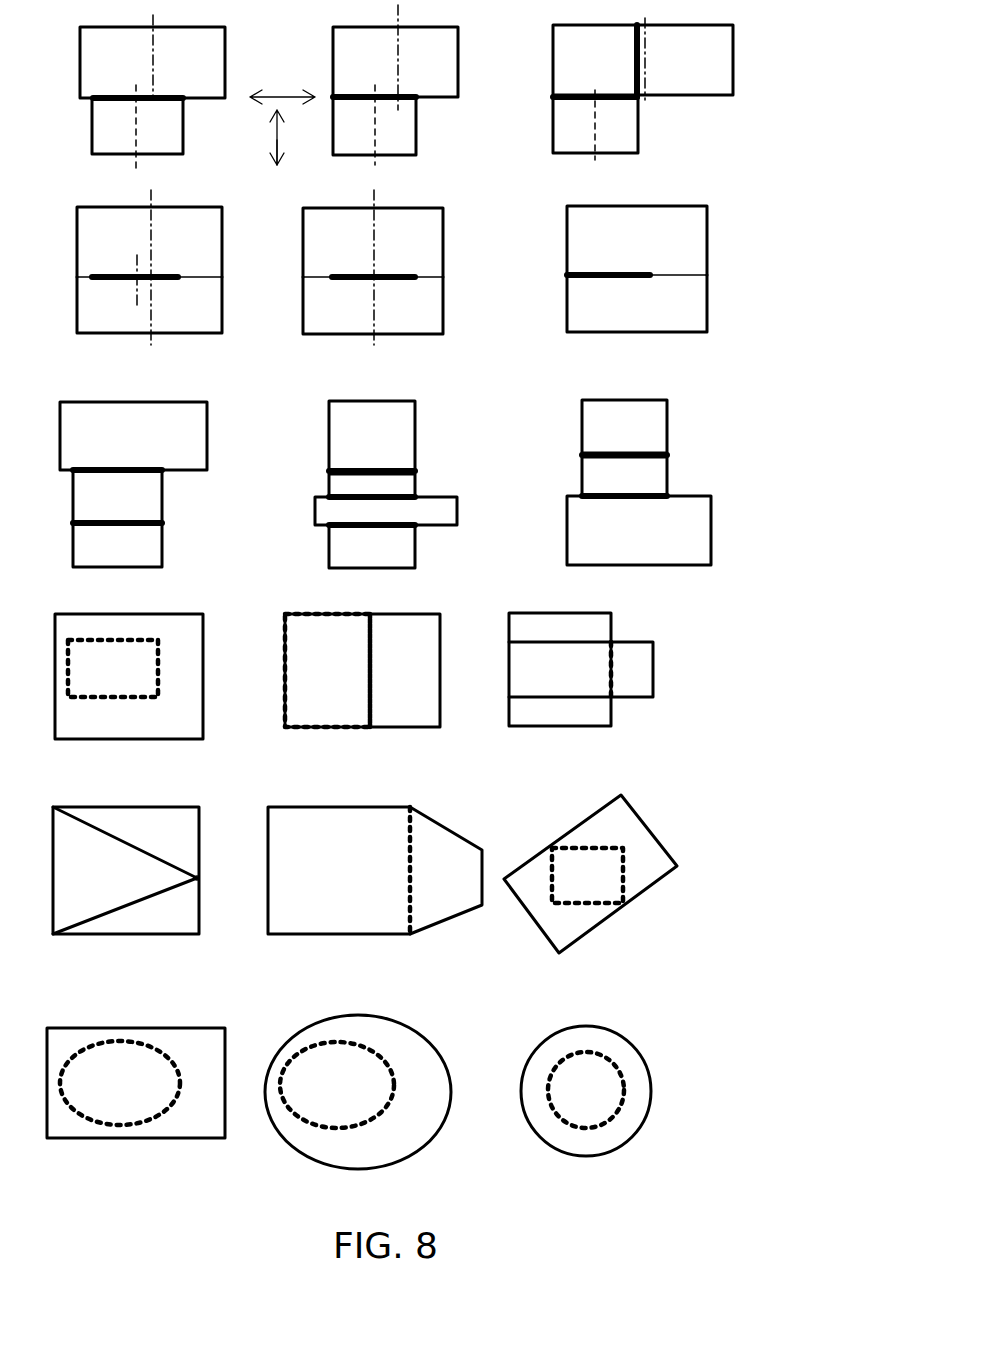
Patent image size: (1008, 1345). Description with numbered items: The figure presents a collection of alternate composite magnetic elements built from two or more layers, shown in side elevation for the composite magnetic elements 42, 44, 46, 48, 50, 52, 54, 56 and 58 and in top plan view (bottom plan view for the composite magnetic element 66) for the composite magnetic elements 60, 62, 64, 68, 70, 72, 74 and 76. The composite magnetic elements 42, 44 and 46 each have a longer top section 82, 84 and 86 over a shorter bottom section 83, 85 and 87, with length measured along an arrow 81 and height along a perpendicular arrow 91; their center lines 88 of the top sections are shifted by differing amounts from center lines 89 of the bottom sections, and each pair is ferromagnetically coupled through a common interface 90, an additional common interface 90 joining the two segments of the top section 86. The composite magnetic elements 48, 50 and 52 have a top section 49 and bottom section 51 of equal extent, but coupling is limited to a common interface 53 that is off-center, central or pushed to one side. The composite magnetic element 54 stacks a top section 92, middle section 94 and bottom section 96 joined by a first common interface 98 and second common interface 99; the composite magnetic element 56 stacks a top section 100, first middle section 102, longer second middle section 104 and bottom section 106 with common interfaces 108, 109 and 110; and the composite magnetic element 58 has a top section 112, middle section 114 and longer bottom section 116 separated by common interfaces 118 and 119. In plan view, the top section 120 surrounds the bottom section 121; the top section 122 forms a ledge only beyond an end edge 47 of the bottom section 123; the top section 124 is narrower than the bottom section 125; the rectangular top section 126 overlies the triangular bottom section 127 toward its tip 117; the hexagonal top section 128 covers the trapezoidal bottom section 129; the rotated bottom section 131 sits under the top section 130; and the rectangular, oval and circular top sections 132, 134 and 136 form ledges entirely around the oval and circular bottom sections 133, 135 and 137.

The composite magnetic element 42 is at (181, 101).
The composite magnetic element 44 is at (423, 100).
The composite magnetic element 46 is at (657, 101).
The end edge 47 is at (432, 705).
The composite magnetic element 48 is at (216, 363).
The top section 49 is at (205, 250).
The composite magnetic element 50 is at (431, 368).
The bottom section 51 is at (208, 305).
The composite magnetic element 52 is at (680, 356).
The common interface 53 is at (106, 272).
The composite magnetic element 54 is at (127, 485).
The composite magnetic element 56 is at (391, 492).
The composite magnetic element 58 is at (669, 482).
The composite magnetic element 60 is at (161, 701).
The composite magnetic element 62 is at (363, 698).
The composite magnetic element 64 is at (626, 698).
The composite magnetic element 66 is at (155, 907).
The composite magnetic element 68 is at (379, 895).
The composite magnetic element 70 is at (629, 886).
The composite magnetic element 72 is at (136, 1118).
The composite magnetic element 74 is at (393, 1100).
The composite magnetic element 76 is at (623, 1105).
The arrow 81 is at (280, 97).
The top section 82 is at (225, 60).
The bottom section 83 is at (92, 125).
The top section 84 is at (458, 48).
The bottom section 85 is at (297, 151).
The top section 86 is at (733, 60).
The bottom section 87 is at (553, 118).
The center line 88 is at (160, 66).
The center line 89 is at (138, 113).
The common interface 90 is at (108, 92).
The arrow 91 is at (275, 132).
The top section 92 is at (115, 442).
The middle section 94 is at (100, 512).
The bottom section 96 is at (100, 562).
The first common interface 98 is at (148, 468).
The second common interface 99 is at (73, 523).
The top section 100 is at (372, 435).
The first middle section 102 is at (348, 500).
The second middle section 104 is at (352, 521).
The bottom section 106 is at (392, 558).
The common interface 108 is at (395, 466).
The common interface 109 is at (329, 497).
The common interface 110 is at (412, 520).
The top section 112 is at (643, 438).
The middle section 114 is at (640, 485).
The bottom section 116 is at (640, 536).
The tip 117 is at (198, 878).
The common interface 118 is at (672, 452).
The common interface 119 is at (675, 522).
The top section 120 is at (190, 680).
The bottom section 121 is at (160, 665).
The top section 122 is at (388, 668).
The bottom section 123 is at (372, 683).
The top section 124 is at (643, 668).
The bottom section 125 is at (600, 712).
The top section 126 is at (194, 844).
The bottom section 127 is at (122, 885).
The top section 128 is at (350, 937).
The bottom section 129 is at (400, 855).
The top section 130 is at (650, 860).
The bottom section 131 is at (625, 880).
The top section 132 is at (182, 1059).
The bottom section 133 is at (183, 1083).
The top section 134 is at (434, 1069).
The bottom section 135 is at (383, 1105).
The top section 136 is at (578, 1057).
The bottom section 137 is at (590, 1124).